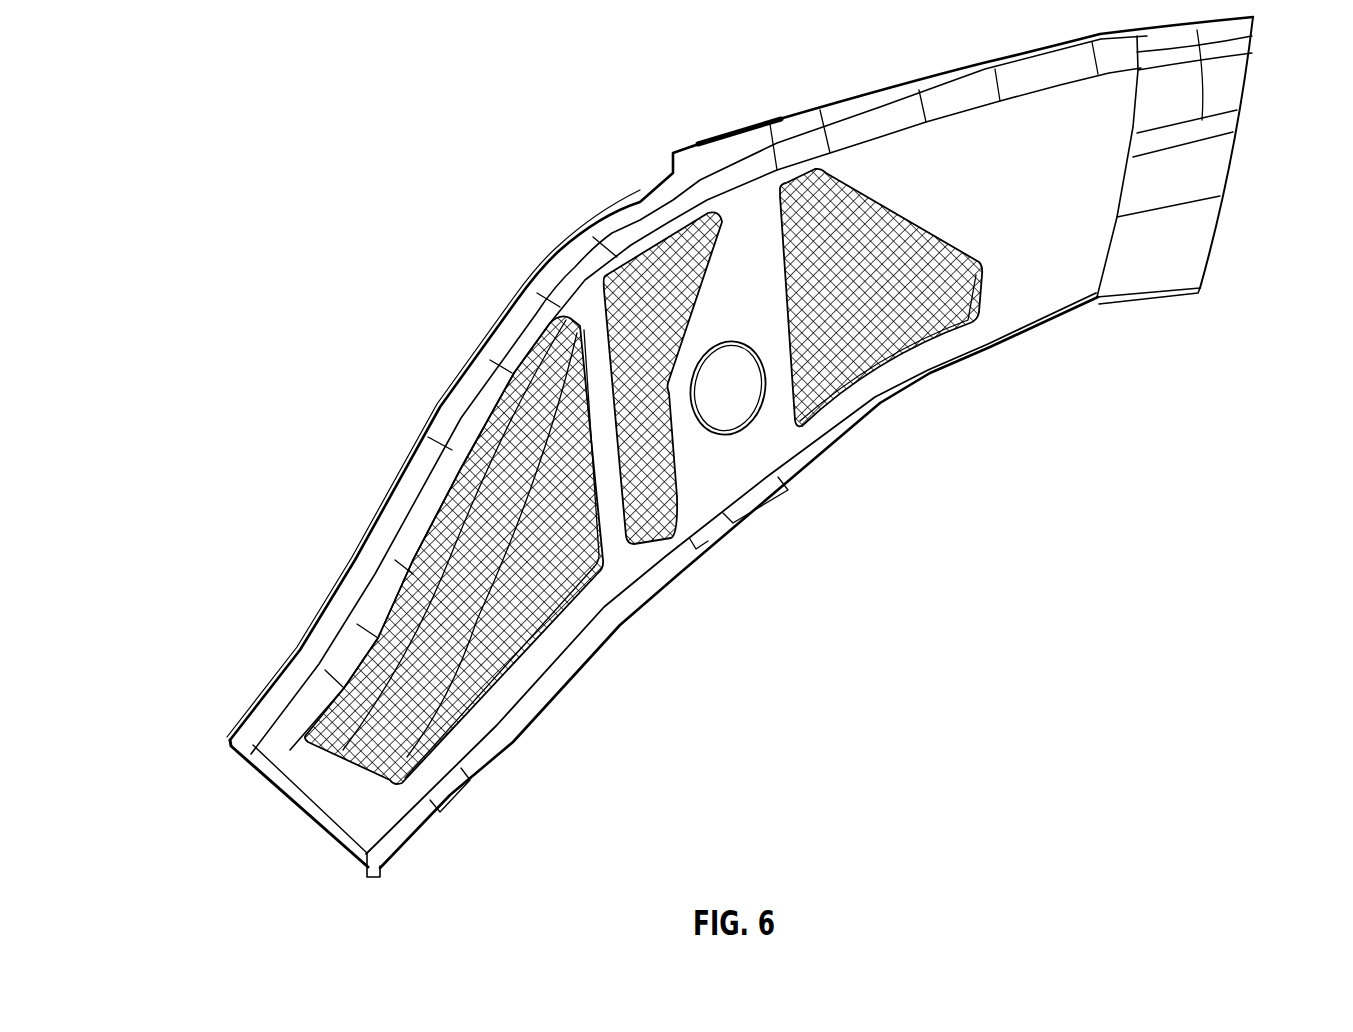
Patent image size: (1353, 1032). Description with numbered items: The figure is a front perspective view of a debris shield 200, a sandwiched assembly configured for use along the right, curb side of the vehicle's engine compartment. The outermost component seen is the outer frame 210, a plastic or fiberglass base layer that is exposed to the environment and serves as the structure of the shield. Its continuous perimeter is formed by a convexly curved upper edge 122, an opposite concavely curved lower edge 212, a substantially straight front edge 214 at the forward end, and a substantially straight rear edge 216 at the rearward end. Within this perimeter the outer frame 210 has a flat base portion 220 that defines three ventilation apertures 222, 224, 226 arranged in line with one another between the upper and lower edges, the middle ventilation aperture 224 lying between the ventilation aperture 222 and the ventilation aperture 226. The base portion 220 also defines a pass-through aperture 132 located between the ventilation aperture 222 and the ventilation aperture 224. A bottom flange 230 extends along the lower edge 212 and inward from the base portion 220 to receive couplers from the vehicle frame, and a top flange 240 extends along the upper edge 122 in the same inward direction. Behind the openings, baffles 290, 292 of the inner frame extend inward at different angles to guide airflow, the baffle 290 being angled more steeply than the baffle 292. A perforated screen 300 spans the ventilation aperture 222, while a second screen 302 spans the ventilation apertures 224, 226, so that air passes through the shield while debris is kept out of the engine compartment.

The debris shield 200 is at (257, 83).
The upper edge 122 is at (560, 253).
The pass-through aperture 132 is at (747, 424).
The outer frame 210 is at (1197, 213).
The lower edge 212 is at (893, 395).
The front edge 214 is at (1210, 252).
The rear edge 216 is at (290, 803).
The base portion 220 is at (1127, 260).
The ventilation aperture 222 is at (957, 326).
The ventilation aperture 224 is at (712, 540).
The ventilation aperture 226 is at (497, 667).
The bottom flange 230 is at (710, 143).
The top flange 240 is at (602, 633).
The baffle 290 is at (655, 262).
The baffle 292 is at (440, 533).
The screen 300 is at (923, 348).
The screen 302 is at (600, 570).